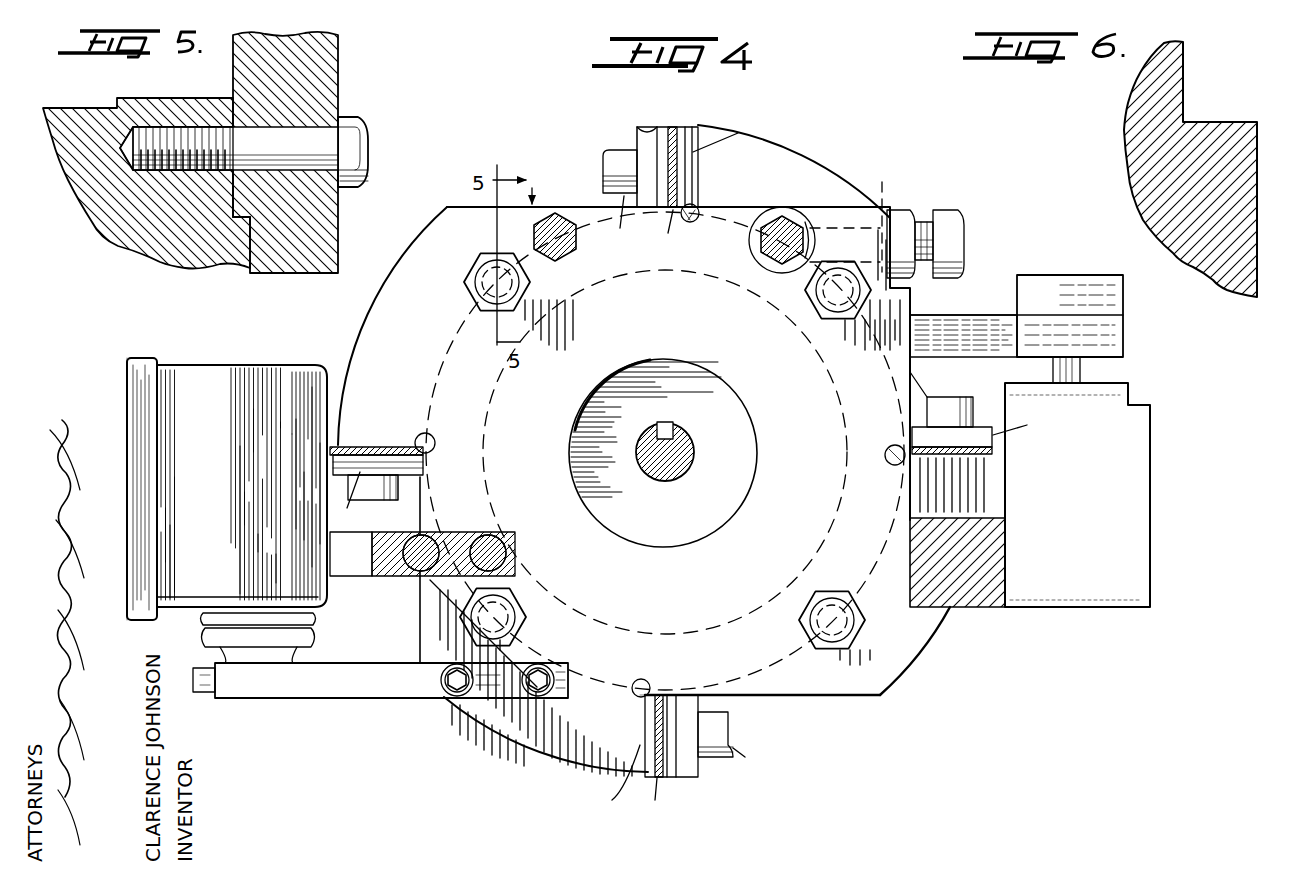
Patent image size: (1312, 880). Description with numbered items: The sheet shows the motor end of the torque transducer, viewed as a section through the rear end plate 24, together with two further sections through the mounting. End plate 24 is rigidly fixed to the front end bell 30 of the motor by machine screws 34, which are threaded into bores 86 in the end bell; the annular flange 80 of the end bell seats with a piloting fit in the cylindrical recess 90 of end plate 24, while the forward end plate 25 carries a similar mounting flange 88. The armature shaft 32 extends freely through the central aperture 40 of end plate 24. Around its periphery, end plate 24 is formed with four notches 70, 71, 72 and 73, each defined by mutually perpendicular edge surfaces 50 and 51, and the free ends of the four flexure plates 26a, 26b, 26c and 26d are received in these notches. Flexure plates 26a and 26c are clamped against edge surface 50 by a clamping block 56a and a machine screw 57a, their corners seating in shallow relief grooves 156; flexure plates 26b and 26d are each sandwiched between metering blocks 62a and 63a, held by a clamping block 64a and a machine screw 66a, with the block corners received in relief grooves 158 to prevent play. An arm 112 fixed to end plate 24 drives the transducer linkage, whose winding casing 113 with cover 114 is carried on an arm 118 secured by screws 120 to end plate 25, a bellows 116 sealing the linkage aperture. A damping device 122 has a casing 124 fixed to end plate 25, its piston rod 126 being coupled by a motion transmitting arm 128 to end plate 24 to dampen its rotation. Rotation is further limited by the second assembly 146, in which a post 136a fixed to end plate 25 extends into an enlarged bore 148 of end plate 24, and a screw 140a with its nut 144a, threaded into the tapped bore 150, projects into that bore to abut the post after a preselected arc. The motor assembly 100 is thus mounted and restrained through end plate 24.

In FIG. 4, the end plate 24 is at (912, 662).
In FIG. 5, the end plate 24 is at (340, 88).
In FIG. 6, the end plate 25 is at (1192, 60).
In FIG. 4, the flexure plate 26a is at (352, 452).
In FIG. 4, the flexure plate 26b is at (672, 130).
In FIG. 4, the flexure plate 26c is at (908, 442).
In FIG. 4, the flexure plate 26d is at (672, 705).
In FIG. 4, the front end bell 30 is at (585, 207).
In FIG. 5, the front end bell 30 is at (162, 98).
In FIG. 4, the armature shaft 32 is at (686, 478).
In FIG. 4, the machine screws 34 is at (808, 637).
In FIG. 5, the machine screws 34 is at (365, 120).
In FIG. 4, the aperture 40 is at (742, 415).
In FIG. 4, the edge surface 50 is at (692, 516).
In FIG. 4, the edge surface 51 is at (418, 625).
In FIG. 4, the clamping block 56a is at (992, 410).
In FIG. 4, the machine screw 57a is at (970, 395).
In FIG. 4, the metering block 62a is at (687, 467).
In FIG. 4, the metering block 63a is at (652, 140).
In FIG. 4, the clamping block 64a is at (700, 767).
In FIG. 4, the machine screw 66a is at (696, 484).
In FIG. 4, the notch 70 is at (418, 509).
In FIG. 4, the notch 71 is at (532, 183).
In FIG. 4, the notch 72 is at (930, 397).
In FIG. 4, the notch 73 is at (814, 700).
In FIG. 5, the flange 80 is at (252, 262).
In FIG. 5, the bores 86 is at (178, 131).
In FIG. 6, the mounting flange 88 is at (1258, 200).
In FIG. 5, the recess 90 is at (242, 252).
In FIG. 4, the motor 100 is at (248, 362).
In FIG. 4, the arm 112 is at (345, 698).
In FIG. 4, the casing 113 is at (180, 366).
In FIG. 4, the cover 114 is at (125, 381).
In FIG. 4, the bellows 116 is at (316, 645).
In FIG. 4, the arm 118 is at (340, 577).
In FIG. 4, the screws 120 is at (420, 567).
In FIG. 4, the damping device 122 is at (1157, 440).
In FIG. 4, the casing 124 is at (1152, 505).
In FIG. 4, the piston rod 126 is at (1082, 370).
In FIG. 4, the motion transmitting arm 128 is at (1126, 340).
In FIG. 4, the post 136a is at (790, 225).
In FIG. 4, the screw 140a is at (960, 212).
In FIG. 4, the nut 144a is at (906, 208).
In FIG. 4, the second assembly 146 is at (952, 190).
In FIG. 4, the enlarged bore 148 is at (768, 260).
In FIG. 4, the tapped bore 150 is at (885, 207).
In FIG. 4, the relief groove 156 is at (893, 465).
In FIG. 4, the relief groove 158 is at (642, 679).